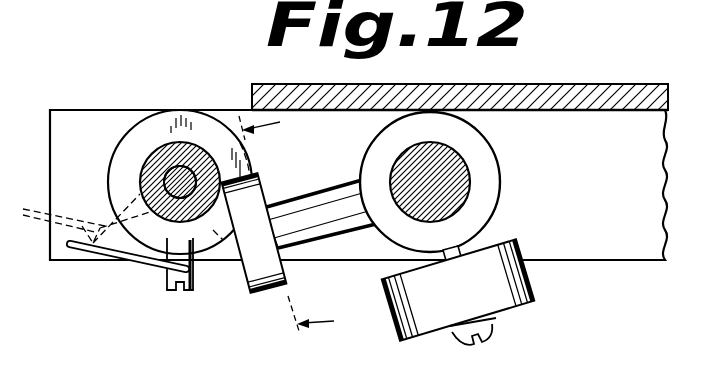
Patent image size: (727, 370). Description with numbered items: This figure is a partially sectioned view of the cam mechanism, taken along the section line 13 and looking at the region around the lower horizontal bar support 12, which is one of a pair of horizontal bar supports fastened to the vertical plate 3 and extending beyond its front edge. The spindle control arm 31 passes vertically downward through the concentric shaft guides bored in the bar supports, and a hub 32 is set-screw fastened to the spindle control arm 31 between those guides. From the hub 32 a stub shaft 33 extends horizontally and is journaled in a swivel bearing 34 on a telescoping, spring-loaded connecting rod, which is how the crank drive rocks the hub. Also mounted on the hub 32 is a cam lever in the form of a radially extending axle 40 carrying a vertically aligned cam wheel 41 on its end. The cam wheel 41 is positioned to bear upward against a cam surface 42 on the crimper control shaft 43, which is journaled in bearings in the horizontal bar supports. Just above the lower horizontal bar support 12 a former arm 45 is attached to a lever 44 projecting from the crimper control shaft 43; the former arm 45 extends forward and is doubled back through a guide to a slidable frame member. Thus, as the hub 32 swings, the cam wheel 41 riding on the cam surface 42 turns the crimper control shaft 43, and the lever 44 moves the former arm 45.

The vertical plate 3 is at (669, 94).
The horizontal bar support 12 is at (637, 249).
The screws 13 is at (300, 221).
The spindle control arm 31 is at (446, 162).
The hub 32 is at (499, 168).
The stub shaft 33 is at (486, 327).
The swivel bearing 34 is at (458, 251).
The axle 40 is at (325, 196).
The cam wheel 41 is at (262, 294).
The cam surface 42 is at (236, 156).
The crimper control shaft 43 is at (150, 162).
The lever 44 is at (170, 290).
The former arm 45 is at (130, 264).